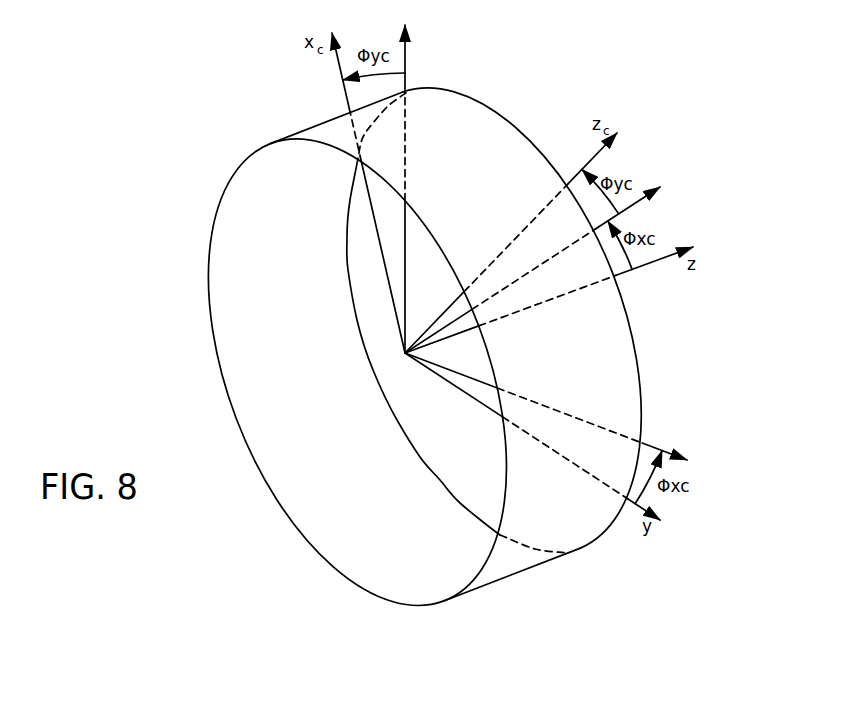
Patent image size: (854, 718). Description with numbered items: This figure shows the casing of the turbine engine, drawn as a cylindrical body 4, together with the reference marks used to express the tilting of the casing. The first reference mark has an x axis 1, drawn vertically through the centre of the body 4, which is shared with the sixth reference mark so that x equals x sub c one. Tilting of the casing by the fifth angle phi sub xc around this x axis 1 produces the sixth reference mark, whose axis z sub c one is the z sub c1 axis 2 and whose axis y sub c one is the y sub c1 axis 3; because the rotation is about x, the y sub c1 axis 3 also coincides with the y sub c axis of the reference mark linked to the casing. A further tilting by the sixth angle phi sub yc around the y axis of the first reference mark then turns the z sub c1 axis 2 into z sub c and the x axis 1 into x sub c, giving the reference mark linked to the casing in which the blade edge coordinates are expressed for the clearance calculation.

The x axis (x = x_c1) 1 is at (440, 189).
The z_c1 axis 2 is at (546, 266).
The y_c1 = y_c axis 3 is at (578, 406).
The cylindrical body 4 is at (396, 367).